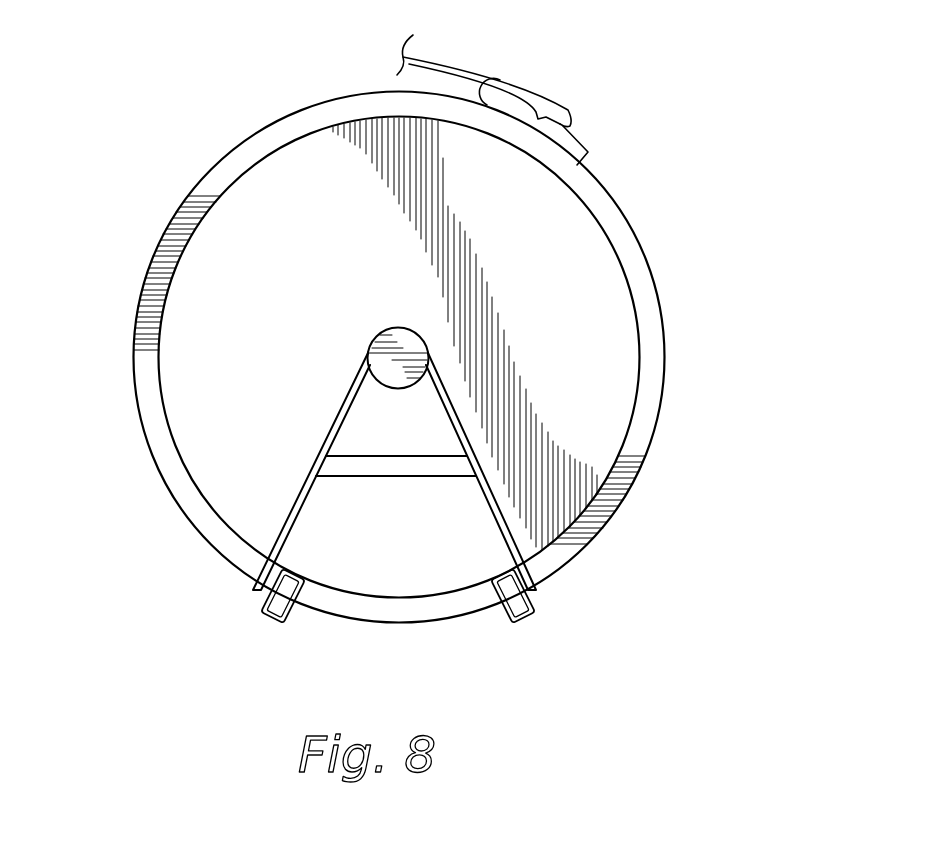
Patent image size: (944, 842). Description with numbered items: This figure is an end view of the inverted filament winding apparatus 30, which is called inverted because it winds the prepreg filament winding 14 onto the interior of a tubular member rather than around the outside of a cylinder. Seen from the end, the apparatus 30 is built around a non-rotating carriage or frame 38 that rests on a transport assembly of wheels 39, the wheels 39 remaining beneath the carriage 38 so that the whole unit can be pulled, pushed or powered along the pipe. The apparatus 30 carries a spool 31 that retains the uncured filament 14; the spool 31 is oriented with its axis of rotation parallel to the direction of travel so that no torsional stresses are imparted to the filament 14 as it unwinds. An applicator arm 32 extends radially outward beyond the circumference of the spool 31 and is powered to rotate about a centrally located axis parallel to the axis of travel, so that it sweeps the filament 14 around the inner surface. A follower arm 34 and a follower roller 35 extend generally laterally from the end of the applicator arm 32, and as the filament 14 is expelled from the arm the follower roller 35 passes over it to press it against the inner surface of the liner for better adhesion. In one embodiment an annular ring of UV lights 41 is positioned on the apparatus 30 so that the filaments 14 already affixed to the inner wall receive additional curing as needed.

The prepreg filament winding 14 is at (457, 57).
The inverted filament winding apparatus 30 is at (386, 368).
The spool 31 is at (207, 367).
The applicator arm 32 is at (583, 150).
The follower arm 34 is at (502, 100).
The follower roller 35 is at (478, 84).
The carriage 38 is at (400, 477).
The wheels 39 is at (292, 624).
The annular ring of UV lights 41 is at (651, 384).